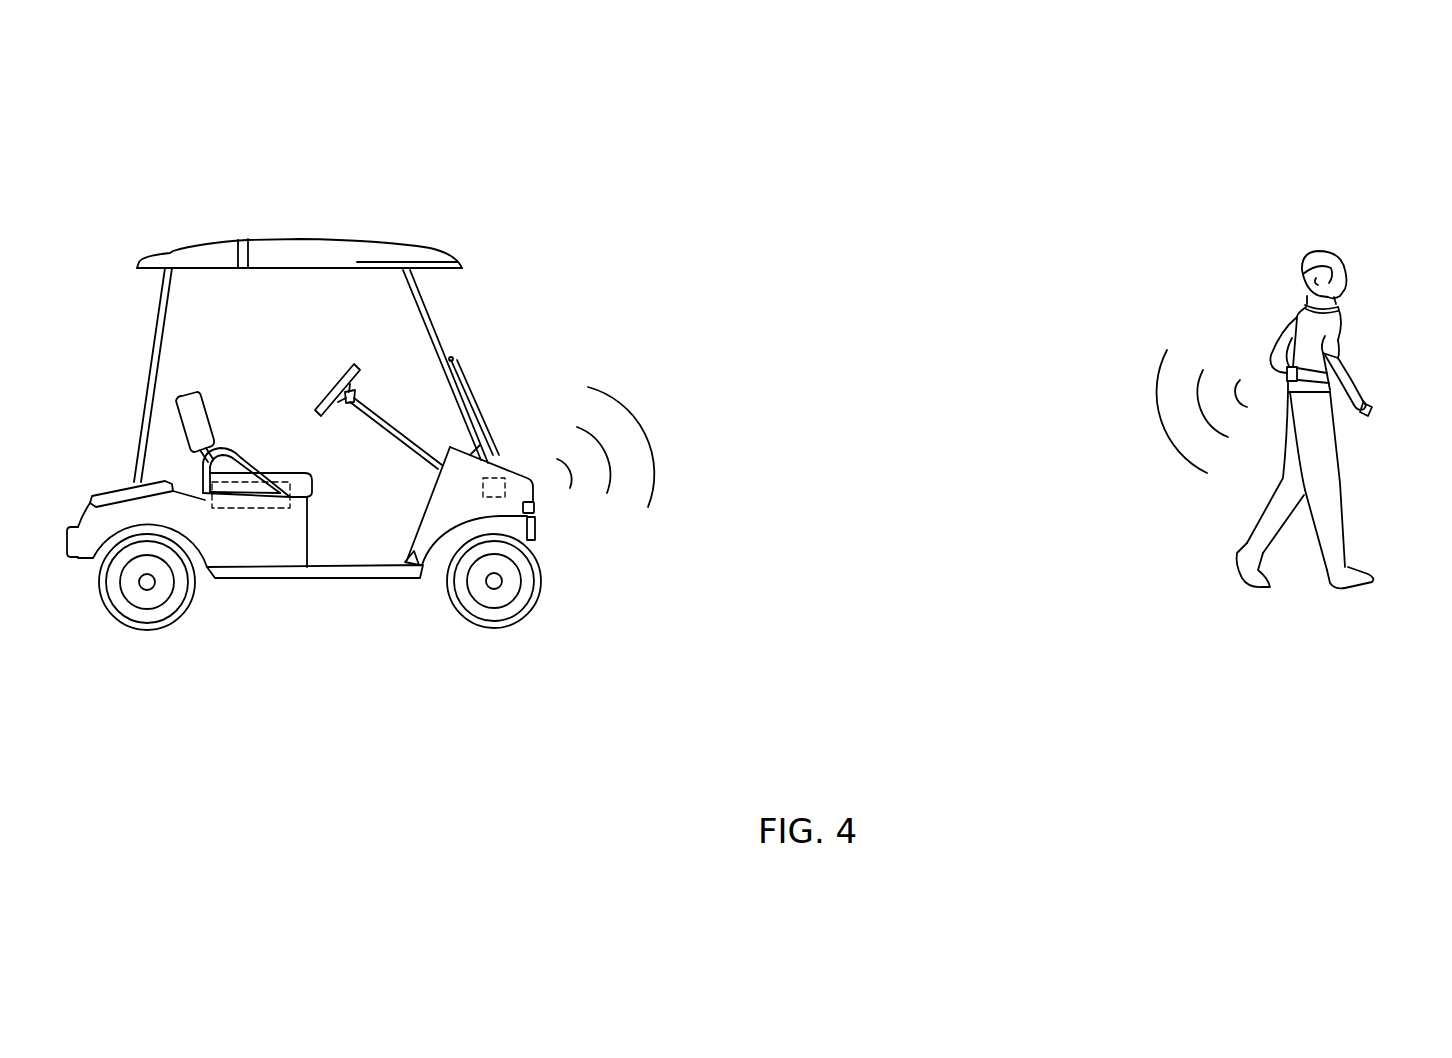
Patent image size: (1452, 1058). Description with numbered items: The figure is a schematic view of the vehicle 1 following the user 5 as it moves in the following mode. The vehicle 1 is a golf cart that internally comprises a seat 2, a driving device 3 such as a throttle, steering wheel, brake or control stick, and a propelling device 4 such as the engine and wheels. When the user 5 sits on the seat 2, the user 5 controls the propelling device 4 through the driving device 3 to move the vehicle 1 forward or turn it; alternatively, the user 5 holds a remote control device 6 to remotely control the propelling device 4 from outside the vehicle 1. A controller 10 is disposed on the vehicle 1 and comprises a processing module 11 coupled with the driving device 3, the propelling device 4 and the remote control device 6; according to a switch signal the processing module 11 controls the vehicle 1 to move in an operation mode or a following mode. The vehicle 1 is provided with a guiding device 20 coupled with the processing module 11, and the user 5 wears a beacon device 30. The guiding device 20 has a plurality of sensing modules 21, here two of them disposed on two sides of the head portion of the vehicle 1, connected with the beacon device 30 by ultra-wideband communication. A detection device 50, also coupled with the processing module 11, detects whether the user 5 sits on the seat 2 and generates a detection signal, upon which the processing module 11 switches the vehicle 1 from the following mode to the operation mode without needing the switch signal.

The vehicle 1 is at (233, 214).
The seat 2 is at (195, 422).
The driving device 3 is at (357, 368).
The propelling device 4 is at (135, 615).
The user 5 is at (1338, 223).
The remote control device 6 is at (1370, 402).
The controller 10 is at (498, 470).
The processing module 11 is at (482, 480).
The guiding device 20 is at (535, 505).
The sensing module 21 is at (537, 524).
The beacon device 30 is at (1285, 373).
The detection device 50 is at (258, 506).